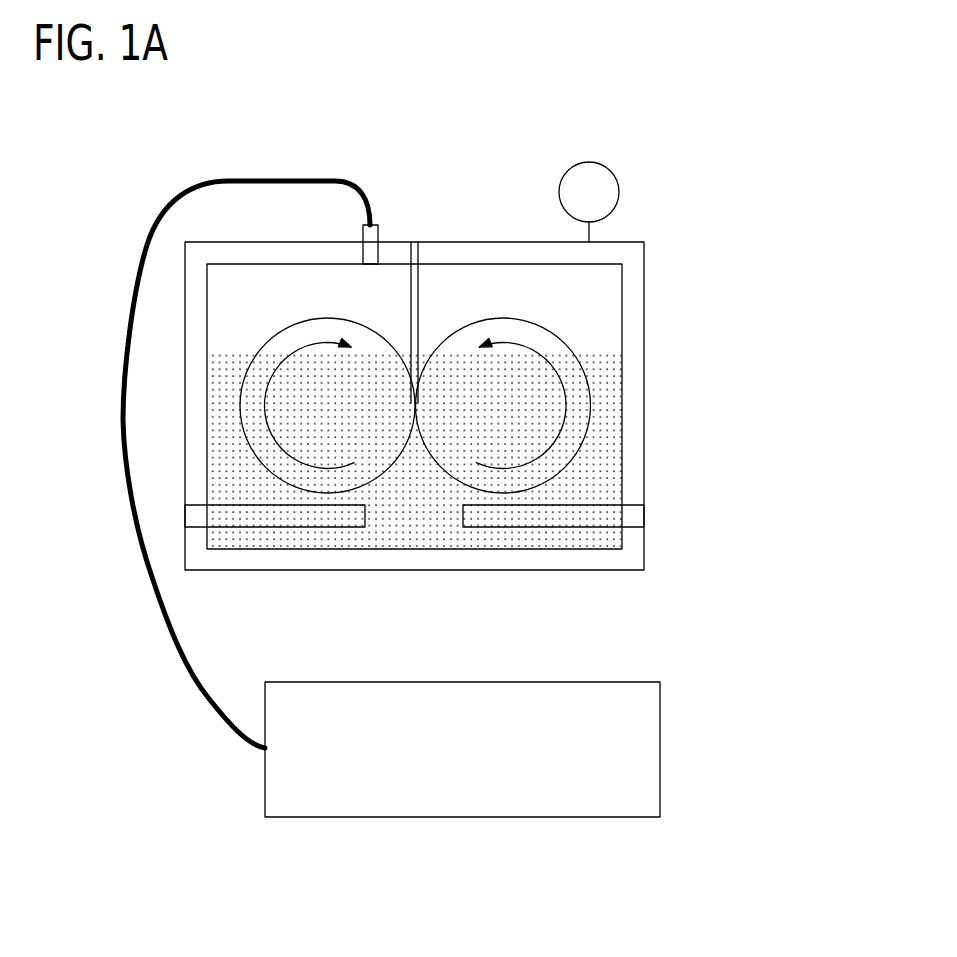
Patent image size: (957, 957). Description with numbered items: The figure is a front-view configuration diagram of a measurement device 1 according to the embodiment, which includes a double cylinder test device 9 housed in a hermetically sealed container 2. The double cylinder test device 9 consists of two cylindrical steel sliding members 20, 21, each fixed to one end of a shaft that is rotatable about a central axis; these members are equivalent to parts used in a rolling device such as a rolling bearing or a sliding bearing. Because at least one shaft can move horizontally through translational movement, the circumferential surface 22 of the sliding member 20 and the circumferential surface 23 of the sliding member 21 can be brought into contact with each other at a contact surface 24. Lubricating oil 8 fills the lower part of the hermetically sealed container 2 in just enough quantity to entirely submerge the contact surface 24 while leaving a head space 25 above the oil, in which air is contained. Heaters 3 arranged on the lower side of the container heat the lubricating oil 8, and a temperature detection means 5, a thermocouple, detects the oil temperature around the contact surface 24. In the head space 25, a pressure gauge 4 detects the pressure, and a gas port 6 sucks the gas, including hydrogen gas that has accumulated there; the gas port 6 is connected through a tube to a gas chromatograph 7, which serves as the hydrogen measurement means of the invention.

The measurement device 1 is at (724, 197).
The hermetically sealed container 2 is at (641, 396).
The heaters 3 is at (283, 518).
The pressure gauge 4 is at (605, 189).
The temperature detection means 5 is at (418, 277).
The gas port 6 is at (376, 239).
The gas chromatograph 7 is at (265, 786).
The lubricating oil 8 is at (597, 464).
The double cylinder test device 9 is at (463, 310).
The sliding member 20 is at (548, 344).
The sliding member 21 is at (283, 345).
The circumferential surface 22 is at (517, 318).
The circumferential surface 23 is at (301, 326).
The contact surface 24 is at (415, 406).
The head space 25 is at (247, 290).